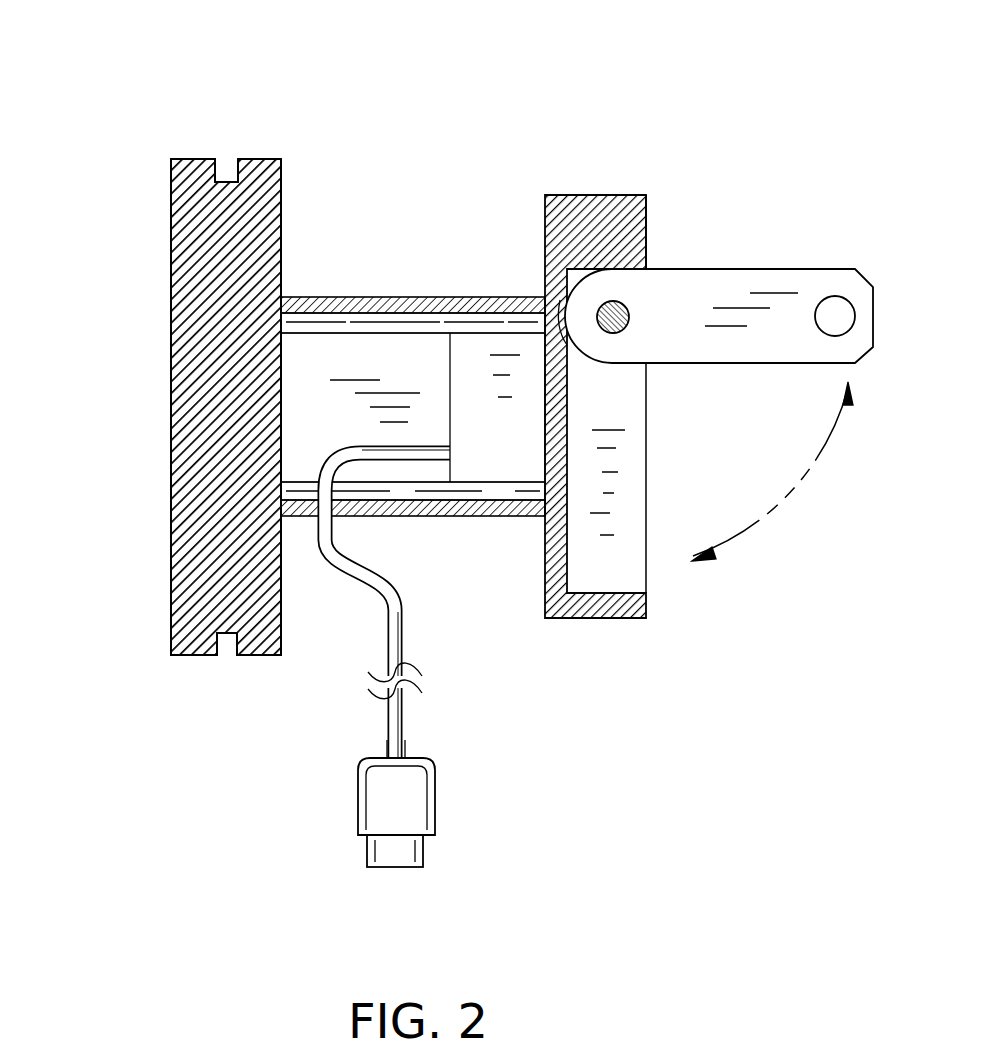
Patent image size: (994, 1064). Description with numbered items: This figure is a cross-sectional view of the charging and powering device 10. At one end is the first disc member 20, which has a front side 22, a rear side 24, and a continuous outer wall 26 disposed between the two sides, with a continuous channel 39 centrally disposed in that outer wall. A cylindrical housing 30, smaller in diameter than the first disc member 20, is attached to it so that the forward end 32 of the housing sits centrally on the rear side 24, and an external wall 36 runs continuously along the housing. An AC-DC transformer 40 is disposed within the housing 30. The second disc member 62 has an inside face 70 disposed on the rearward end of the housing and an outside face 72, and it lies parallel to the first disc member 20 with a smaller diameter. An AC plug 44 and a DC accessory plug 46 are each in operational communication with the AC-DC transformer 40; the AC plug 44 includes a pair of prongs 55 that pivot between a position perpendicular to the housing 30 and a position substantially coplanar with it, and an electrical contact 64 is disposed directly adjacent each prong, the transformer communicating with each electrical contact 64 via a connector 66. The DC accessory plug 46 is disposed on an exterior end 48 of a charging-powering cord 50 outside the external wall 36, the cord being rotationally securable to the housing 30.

The charging and powering device 10 is at (417, 105).
The first disc member 20 is at (279, 158).
The front side 22 is at (172, 264).
The rear side 24 is at (283, 262).
The continuous outer wall 26 is at (255, 222).
The cylindrical housing 30 is at (420, 297).
The forward end 32 is at (283, 355).
The external wall 36 is at (475, 313).
The continuous channel 39 is at (226, 646).
The AC-DC transformer 40 is at (567, 440).
The AC plug 44 is at (862, 270).
The DC accessory plug 46 is at (437, 800).
The exterior end 48 is at (398, 757).
The charging-powering cord 50 is at (405, 722).
The prongs 55 is at (797, 278).
The second disc member 62 is at (645, 195).
The electrical contact 64 is at (646, 243).
The connector 66 is at (557, 346).
The inside face 70 is at (545, 199).
The outside face 72 is at (648, 214).